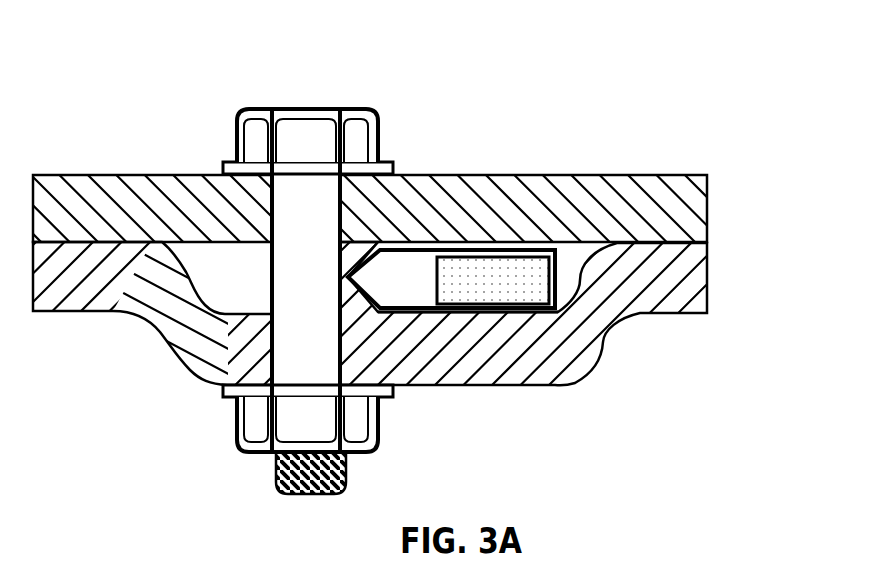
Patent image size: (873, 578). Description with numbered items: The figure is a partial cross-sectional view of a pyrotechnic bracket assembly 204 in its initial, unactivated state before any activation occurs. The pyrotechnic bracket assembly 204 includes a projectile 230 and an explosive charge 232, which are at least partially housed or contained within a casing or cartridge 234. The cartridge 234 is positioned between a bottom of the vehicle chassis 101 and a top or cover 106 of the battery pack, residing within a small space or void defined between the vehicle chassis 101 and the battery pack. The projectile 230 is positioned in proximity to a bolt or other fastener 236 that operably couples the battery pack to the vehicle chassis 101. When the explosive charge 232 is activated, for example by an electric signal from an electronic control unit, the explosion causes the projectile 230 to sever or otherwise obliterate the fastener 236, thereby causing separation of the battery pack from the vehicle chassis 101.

The vehicle chassis 101 is at (108, 207).
The cover 106 is at (110, 275).
The pyrotechnic bracket assembly 204 is at (417, 248).
The projectile 230 is at (465, 183).
The explosive charge 232 is at (510, 280).
The cartridge 234 is at (493, 313).
The fastener 236 is at (307, 205).